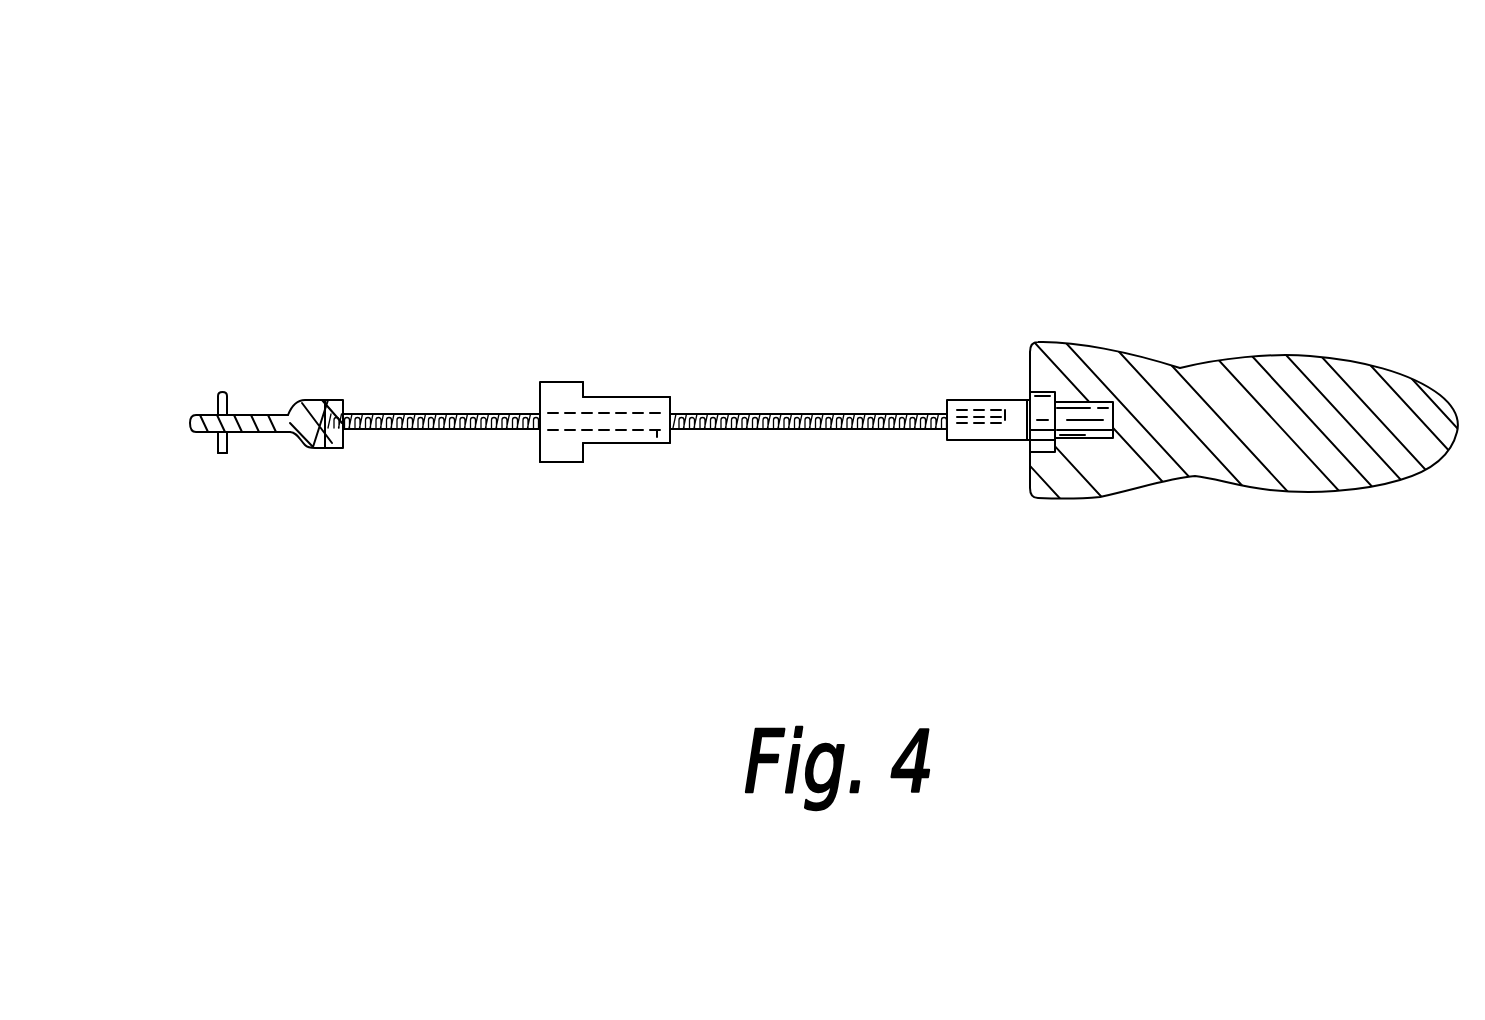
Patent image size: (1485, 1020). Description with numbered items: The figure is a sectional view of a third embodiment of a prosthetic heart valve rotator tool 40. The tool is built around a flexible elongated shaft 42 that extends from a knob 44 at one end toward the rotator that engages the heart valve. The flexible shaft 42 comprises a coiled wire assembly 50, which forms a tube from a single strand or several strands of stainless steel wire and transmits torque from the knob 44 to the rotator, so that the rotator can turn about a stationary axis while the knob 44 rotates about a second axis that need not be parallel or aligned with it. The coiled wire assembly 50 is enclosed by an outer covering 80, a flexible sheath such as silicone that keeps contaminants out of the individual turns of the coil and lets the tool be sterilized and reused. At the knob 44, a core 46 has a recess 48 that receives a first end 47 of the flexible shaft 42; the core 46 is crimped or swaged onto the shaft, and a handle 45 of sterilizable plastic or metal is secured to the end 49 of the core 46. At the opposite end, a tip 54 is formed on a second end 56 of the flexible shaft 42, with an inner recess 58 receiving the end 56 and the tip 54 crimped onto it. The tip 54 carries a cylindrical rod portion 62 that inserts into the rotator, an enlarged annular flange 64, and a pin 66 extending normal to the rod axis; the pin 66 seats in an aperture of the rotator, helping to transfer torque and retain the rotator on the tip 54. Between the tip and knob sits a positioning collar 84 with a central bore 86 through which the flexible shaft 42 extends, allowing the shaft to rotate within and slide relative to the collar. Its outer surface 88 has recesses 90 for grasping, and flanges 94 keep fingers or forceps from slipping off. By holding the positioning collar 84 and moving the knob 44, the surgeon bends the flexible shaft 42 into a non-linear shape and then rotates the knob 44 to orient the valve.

The prosthetic heart valve rotator tool 40 is at (817, 193).
The flexible elongated shaft 42 is at (827, 411).
The knob 44 is at (1180, 358).
The handle 45 is at (1278, 355).
The core 46 is at (1027, 440).
The first end 47 is at (980, 432).
The recess 48 is at (958, 414).
The end 49 is at (1082, 433).
The coiled wire assembly 50 is at (725, 393).
The tip 54 is at (307, 348).
The second end 56 is at (331, 434).
The inner recess 58 is at (310, 447).
The cylindrical rod portion 62 is at (241, 414).
The annular flange 64 is at (285, 433).
The pin 66 is at (215, 448).
The outer covering 80 is at (777, 413).
The positioning collar 84 is at (558, 382).
The central bore 86 is at (658, 445).
The outer surface 88 is at (562, 462).
The recesses 90 is at (628, 398).
The flanges 94 is at (586, 396).